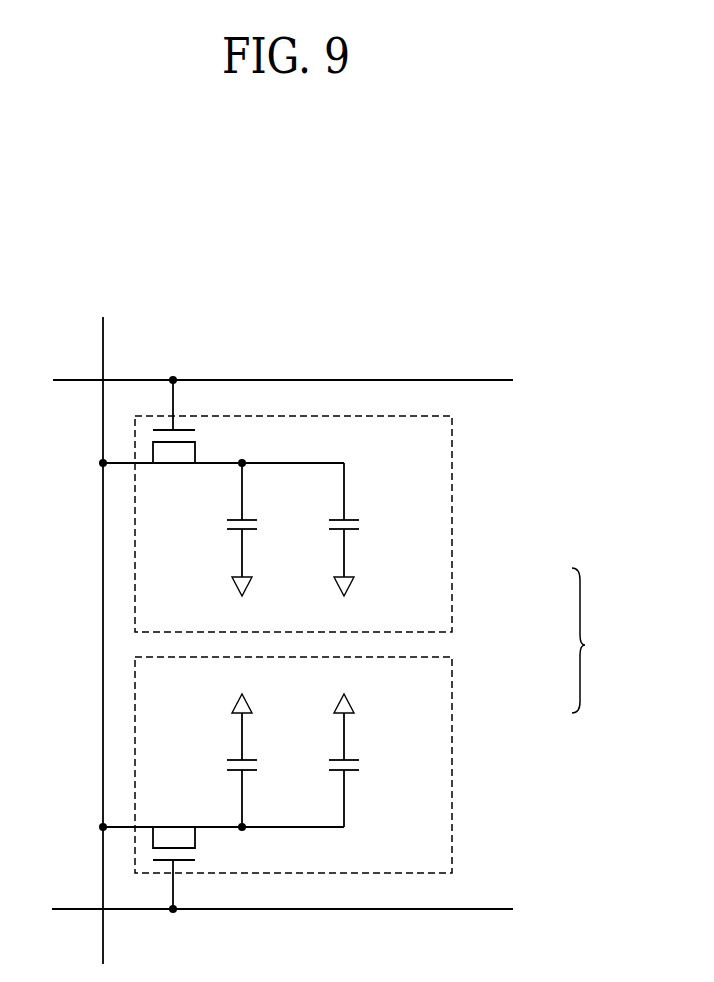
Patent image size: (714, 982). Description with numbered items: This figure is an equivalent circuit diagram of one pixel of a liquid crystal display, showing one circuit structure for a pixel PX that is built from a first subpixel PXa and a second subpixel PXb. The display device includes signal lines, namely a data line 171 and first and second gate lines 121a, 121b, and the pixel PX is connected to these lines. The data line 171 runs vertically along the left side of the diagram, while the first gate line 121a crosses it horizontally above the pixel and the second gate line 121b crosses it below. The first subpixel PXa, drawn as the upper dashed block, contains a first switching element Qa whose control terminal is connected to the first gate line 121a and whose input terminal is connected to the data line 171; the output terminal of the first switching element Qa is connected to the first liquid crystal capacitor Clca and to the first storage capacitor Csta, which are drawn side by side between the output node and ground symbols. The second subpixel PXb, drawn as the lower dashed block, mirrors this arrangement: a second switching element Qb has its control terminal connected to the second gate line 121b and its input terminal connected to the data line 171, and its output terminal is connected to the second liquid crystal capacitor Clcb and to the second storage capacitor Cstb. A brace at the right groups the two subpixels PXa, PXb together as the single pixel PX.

The data line 171 is at (103, 332).
The first gate line 121a is at (483, 380).
The second gate line 121b is at (483, 909).
The pixel PX is at (597, 640).
The first subpixel PXa is at (452, 577).
The second subpixel PXb is at (452, 703).
The first switching element Qa is at (221, 434).
The second switching element Qb is at (221, 855).
The first liquid crystal capacitor Clca is at (267, 529).
The first storage capacitor Csta is at (370, 529).
The second liquid crystal capacitor Clcb is at (267, 760).
The second storage capacitor Cstb is at (370, 760).